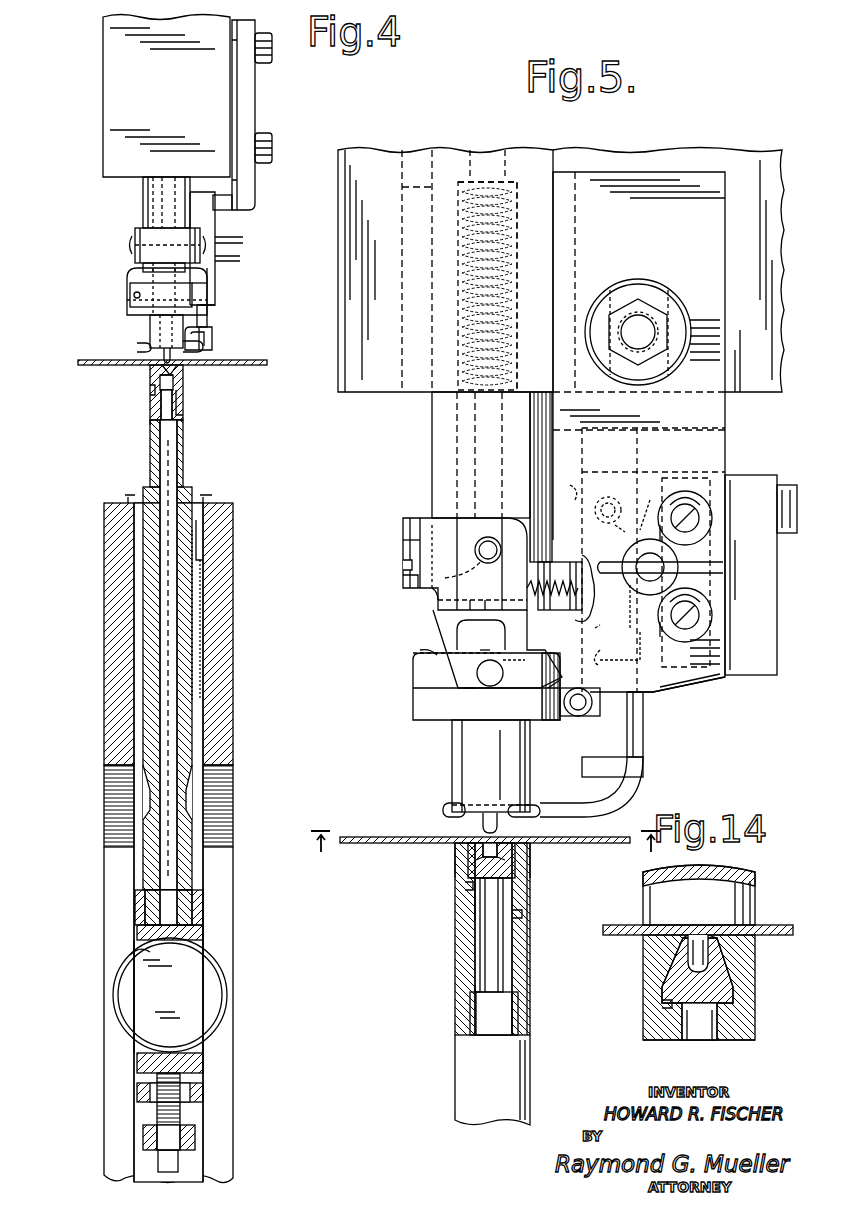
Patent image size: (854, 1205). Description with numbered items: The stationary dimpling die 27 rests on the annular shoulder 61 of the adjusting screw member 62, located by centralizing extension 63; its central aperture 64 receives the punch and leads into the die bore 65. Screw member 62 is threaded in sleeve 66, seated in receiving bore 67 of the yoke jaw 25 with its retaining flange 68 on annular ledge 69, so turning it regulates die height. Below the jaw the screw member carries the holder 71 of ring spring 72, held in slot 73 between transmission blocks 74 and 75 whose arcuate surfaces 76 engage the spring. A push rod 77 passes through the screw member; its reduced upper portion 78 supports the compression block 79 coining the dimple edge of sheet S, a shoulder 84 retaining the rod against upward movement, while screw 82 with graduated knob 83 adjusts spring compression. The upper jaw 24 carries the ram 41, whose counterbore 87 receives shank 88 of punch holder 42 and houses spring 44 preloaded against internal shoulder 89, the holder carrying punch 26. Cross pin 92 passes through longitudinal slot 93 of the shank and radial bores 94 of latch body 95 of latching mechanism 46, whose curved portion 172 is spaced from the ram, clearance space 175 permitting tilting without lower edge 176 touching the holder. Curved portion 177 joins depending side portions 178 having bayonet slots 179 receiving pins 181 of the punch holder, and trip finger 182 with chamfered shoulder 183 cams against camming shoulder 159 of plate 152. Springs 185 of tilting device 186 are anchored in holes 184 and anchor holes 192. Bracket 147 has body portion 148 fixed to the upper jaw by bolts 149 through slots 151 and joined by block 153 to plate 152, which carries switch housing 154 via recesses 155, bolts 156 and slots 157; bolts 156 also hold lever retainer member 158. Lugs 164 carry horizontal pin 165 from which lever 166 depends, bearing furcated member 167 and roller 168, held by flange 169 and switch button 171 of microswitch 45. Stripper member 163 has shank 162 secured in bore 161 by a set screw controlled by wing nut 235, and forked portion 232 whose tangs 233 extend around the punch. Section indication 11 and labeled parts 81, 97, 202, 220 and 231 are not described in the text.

In FIG. 4, the upper jaw 24 is at (172, 89).
In FIG. 5, the upper jaw 24 is at (386, 285).
In FIG. 4, the yoke jaw 25 is at (104, 553).
In FIG. 4, the dimpling punch 26 is at (152, 342).
In FIG. 5, the dimpling punch 26 is at (452, 780).
In FIG. 14, the dimpling punch 26 is at (705, 908).
In FIG. 4, the stationary dimpling die 27 is at (150, 372).
In FIG. 5, the stationary dimpling die 27 is at (458, 858).
In FIG. 14, the stationary dimpling die 27 is at (645, 955).
In FIG. 4, the ram 41 is at (143, 201).
In FIG. 5, the ram 41 is at (438, 410).
In FIG. 4, the punch holder 42 is at (140, 308).
In FIG. 5, the punch holder 42 is at (413, 705).
In FIG. 5, the spring 44 is at (460, 230).
In FIG. 5, the microswitch 45 is at (762, 565).
In FIG. 4, the latching mechanism 46 is at (124, 256).
In FIG. 5, the latching mechanism 46 is at (391, 599).
In FIG. 4, the annular shoulder 61 is at (152, 404).
In FIG. 5, the annular shoulder 61 is at (468, 915).
In FIG. 4, the adjusting screw member 62 is at (180, 495).
In FIG. 5, the adjusting screw member 62 is at (455, 948).
In FIG. 4, the centralizing cylindrical extension 63 is at (180, 402).
In FIG. 5, the centralizing cylindrical extension 63 is at (515, 898).
In FIG. 14, the centralizing cylindrical extension 63 is at (725, 1028).
In FIG. 4, the central aperture 64 is at (180, 372).
In FIG. 5, the central aperture 64 is at (530, 852).
In FIG. 14, the central aperture 64 is at (712, 958).
In FIG. 4, the bore 65 is at (150, 390).
In FIG. 5, the bore 65 is at (468, 887).
In FIG. 14, the bore 65 is at (665, 1004).
In FIG. 4, the sleeve 66 is at (197, 560).
In FIG. 4, the receiving bore 67 is at (203, 530).
In FIG. 4, the retaining flange 68 is at (212, 497).
In FIG. 4, the annular ledge 69 is at (133, 497).
In FIG. 4, the holder 71 is at (200, 900).
In FIG. 4, the ring spring 72 is at (227, 982).
In FIG. 4, the slot 73 is at (140, 955).
In FIG. 4, the transmission block 74 is at (203, 936).
In FIG. 4, the transmission block 75 is at (203, 1057).
In FIG. 4, the arcuate surface 76 is at (175, 958).
In FIG. 4, the push rod 77 is at (170, 457).
In FIG. 5, the push rod 77 is at (500, 1018).
In FIG. 4, the upper portion of push rod 78 is at (180, 420).
In FIG. 5, the upper portion of push rod 78 is at (503, 962).
In FIG. 14, the upper portion of push rod 78 is at (700, 1040).
In FIG. 4, the compression block 79 is at (175, 383).
In FIG. 5, the compression block 79 is at (515, 870).
In FIG. 14, the compression block 79 is at (725, 985).
In FIG. 4, the pin 81 is at (167, 355).
In FIG. 5, the pin 81 is at (483, 824).
In FIG. 14, the pin 81 is at (690, 958).
In FIG. 4, the screw 82 is at (180, 1115).
In FIG. 4, the graduated knob 83 is at (195, 1148).
In FIG. 4, the shoulder 84 is at (152, 424).
In FIG. 5, the shoulder 84 is at (475, 990).
In FIG. 5, the counterbore 87 is at (460, 275).
In FIG. 4, the shank 88 is at (160, 275).
In FIG. 5, the shank 88 is at (455, 448).
In FIG. 5, the internal shoulder 89 is at (462, 185).
In FIG. 4, the cross pin 92 is at (132, 242).
In FIG. 5, the cross pin 92 is at (487, 560).
In FIG. 5, the longitudinal slot 93 is at (458, 566).
In FIG. 5, the radial bores 94 is at (485, 538).
In FIG. 5, the latch body 95 is at (425, 520).
In FIG. 5, the channel 97 is at (425, 176).
In FIG. 4, the bracket 147 is at (254, 218).
In FIG. 5, the bracket 147 is at (765, 445).
In FIG. 4, the body portion 148 is at (253, 100).
In FIG. 5, the body portion 148 is at (655, 225).
In FIG. 4, the bolts 149 is at (272, 46).
In FIG. 5, the bolts 149 is at (650, 318).
In FIG. 5, the slots 151 is at (612, 303).
In FIG. 4, the plate 152 is at (212, 268).
In FIG. 5, the plate 152 is at (675, 690).
In FIG. 4, the block 153 is at (225, 203).
In FIG. 5, the switch housing 154 is at (653, 480).
In FIG. 5, the recesses 155 is at (705, 540).
In FIG. 5, the attaching bolts 156 is at (699, 522).
In FIG. 5, the slots 157 is at (700, 512).
In FIG. 5, the lever retainer member 158 is at (624, 607).
In FIG. 5, the camming shoulder 159 is at (555, 682).
In FIG. 5, the bore 161 is at (586, 440).
In FIG. 4, the shank 162 is at (210, 307).
In FIG. 5, the shank 162 is at (643, 715).
In FIG. 4, the stripper member 163 is at (219, 332).
In FIG. 5, the stripper member 163 is at (653, 766).
In FIG. 5, the lugs 164 is at (609, 504).
In FIG. 5, the horizontal pin 165 is at (607, 531).
In FIG. 5, the lever 166 is at (600, 636).
In FIG. 5, the furcated member 167 is at (595, 760).
In FIG. 5, the roller 168 is at (575, 716).
In FIG. 5, the flange 169 is at (595, 665).
In FIG. 5, the switch button 171 is at (651, 512).
In FIG. 5, the curved portion 172 is at (420, 543).
In FIG. 5, the clearance space 175 is at (403, 530).
In FIG. 5, the lower edge 176 is at (410, 585).
In FIG. 5, the curved portion 177 is at (440, 615).
In FIG. 4, the depending side portions 178 is at (207, 290).
In FIG. 5, the depending side portions 178 is at (440, 640).
In FIG. 5, the bayonet slot 179 is at (475, 690).
In FIG. 4, the pins 181 is at (130, 293).
In FIG. 5, the pins 181 is at (490, 686).
In FIG. 5, the trip finger 182 is at (518, 662).
In FIG. 5, the chamfered shoulder 183 is at (489, 644).
In FIG. 5, the drilled holes 184 is at (520, 580).
In FIG. 5, the springs 185 is at (565, 575).
In FIG. 5, the tilting device 186 is at (549, 614).
In FIG. 5, the spring anchor hole 192 is at (586, 582).
In FIG. 5, the knob 202 is at (770, 470).
In FIG. 5, the shaft 220 is at (784, 494).
In FIG. 5, the edge 231 is at (430, 652).
In FIG. 4, the forked portion 232 is at (143, 342).
In FIG. 5, the forked portion 232 is at (520, 817).
In FIG. 5, the tangs 233 is at (445, 812).
In FIG. 4, the wing nut 235 is at (243, 240).
In FIG. 5, the wing nut 235 is at (720, 568).
In FIG. 4, the sheet metal S is at (268, 360).
In FIG. 5, the sheet metal S is at (615, 837).
In FIG. 14, the sheet metal S is at (778, 925).
In FIG. 5, the section line 11 is at (485, 834).